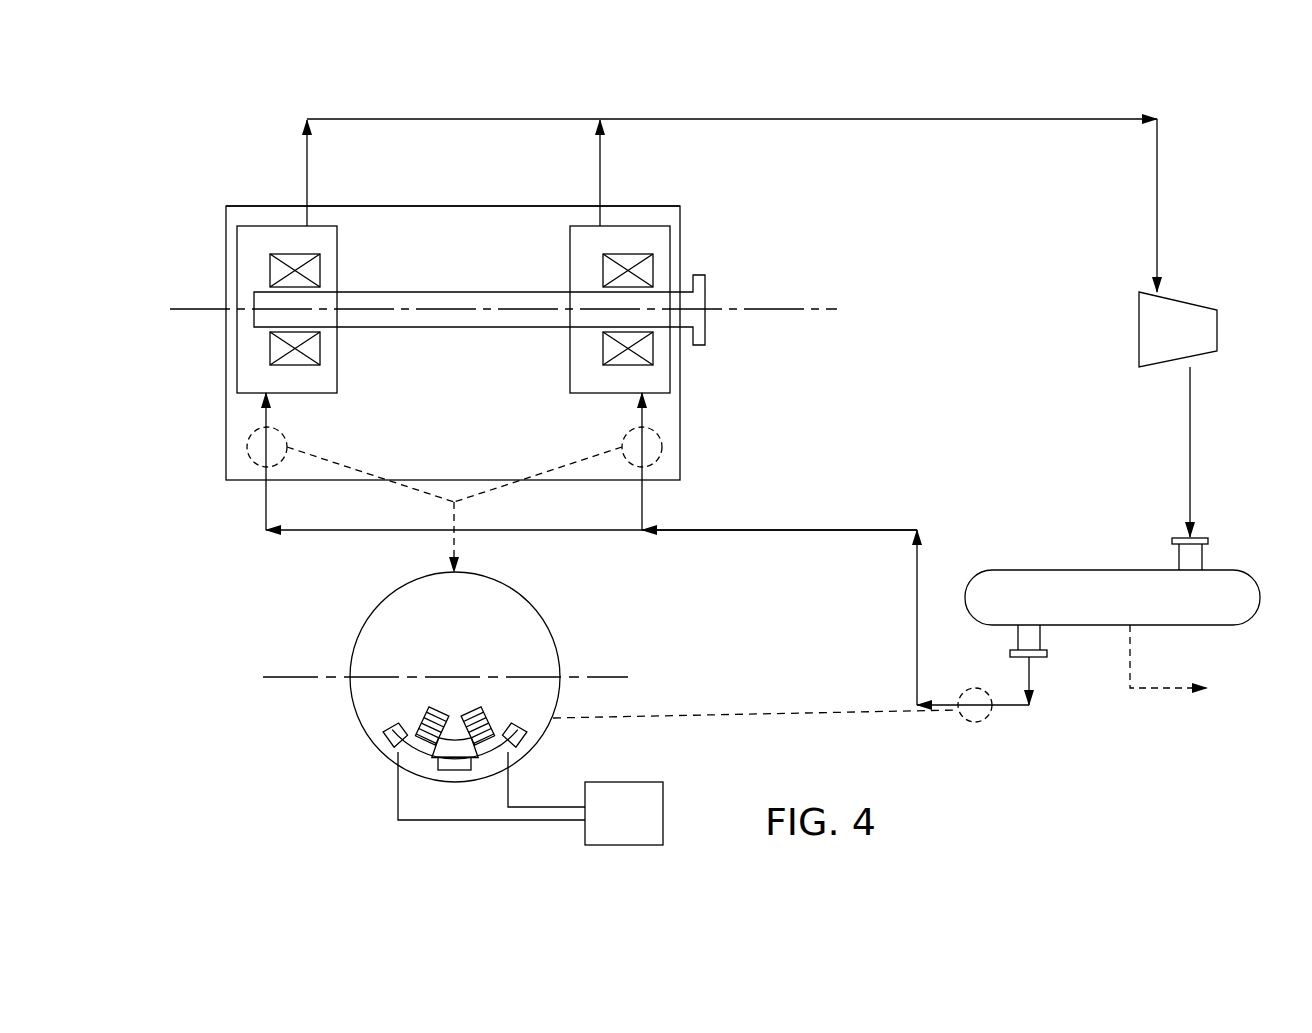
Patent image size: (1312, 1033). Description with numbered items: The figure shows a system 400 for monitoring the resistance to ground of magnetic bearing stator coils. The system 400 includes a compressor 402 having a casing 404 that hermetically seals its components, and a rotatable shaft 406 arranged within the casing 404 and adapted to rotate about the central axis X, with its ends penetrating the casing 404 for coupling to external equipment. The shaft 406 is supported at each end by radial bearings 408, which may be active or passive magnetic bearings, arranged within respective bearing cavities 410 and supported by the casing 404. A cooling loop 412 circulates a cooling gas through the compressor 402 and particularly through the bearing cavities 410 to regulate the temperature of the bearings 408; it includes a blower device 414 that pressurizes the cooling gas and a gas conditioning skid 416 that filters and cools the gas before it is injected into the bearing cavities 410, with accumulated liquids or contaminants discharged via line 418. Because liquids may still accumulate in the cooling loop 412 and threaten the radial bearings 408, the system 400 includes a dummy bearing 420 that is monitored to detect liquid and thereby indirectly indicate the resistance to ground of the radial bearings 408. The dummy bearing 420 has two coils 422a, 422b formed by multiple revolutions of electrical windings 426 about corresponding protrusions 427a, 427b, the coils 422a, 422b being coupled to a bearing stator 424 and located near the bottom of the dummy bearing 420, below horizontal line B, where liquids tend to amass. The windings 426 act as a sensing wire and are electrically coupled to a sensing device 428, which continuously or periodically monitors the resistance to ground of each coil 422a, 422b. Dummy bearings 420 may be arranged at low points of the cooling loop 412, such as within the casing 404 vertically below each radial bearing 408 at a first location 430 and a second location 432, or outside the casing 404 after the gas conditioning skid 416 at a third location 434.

The system 400 is at (1228, 155).
The compressor 402 is at (436, 255).
The casing 404 is at (506, 206).
The shaft 406 is at (468, 327).
The radial bearings 408 is at (270, 271).
The bearing cavities 410 is at (253, 225).
The cooling loop 412 is at (957, 119).
The blower device 414 is at (1194, 338).
The gas conditioning skid 416 is at (1140, 606).
The line 418 is at (1132, 653).
The dummy bearing 420 is at (537, 605).
The coil 422a is at (428, 737).
The coil 422b is at (475, 737).
The bearing stator 424 is at (418, 765).
The electrical windings 426 is at (450, 820).
The protrusion 427a is at (442, 707).
The protrusion 427b is at (467, 707).
The sensing device 428 is at (642, 815).
The first location 430 is at (247, 446).
The second location 432 is at (662, 447).
The third location 434 is at (975, 722).